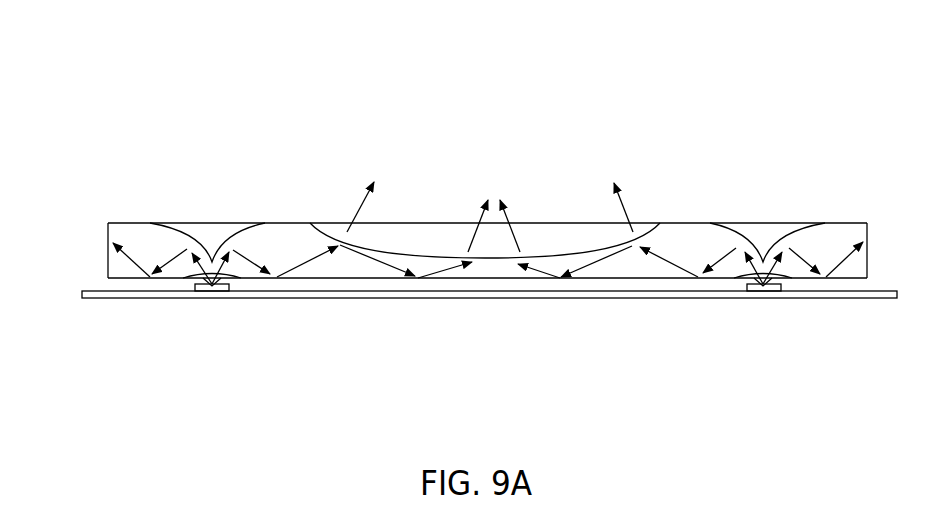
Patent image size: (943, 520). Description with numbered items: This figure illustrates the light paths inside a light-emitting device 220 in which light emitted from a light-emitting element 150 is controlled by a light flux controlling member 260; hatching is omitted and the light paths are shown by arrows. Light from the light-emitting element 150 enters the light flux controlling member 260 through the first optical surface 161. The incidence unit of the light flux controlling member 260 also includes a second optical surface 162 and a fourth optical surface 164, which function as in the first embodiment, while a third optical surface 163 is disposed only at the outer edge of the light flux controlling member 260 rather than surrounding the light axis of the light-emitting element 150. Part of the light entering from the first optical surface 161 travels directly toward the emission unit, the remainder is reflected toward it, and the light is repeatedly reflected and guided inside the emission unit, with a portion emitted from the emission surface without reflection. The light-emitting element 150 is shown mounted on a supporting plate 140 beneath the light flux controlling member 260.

The light-emitting device 220 is at (837, 47).
The light flux controlling member 260 is at (688, 221).
The second optical surface 162 is at (172, 224).
The third optical surface 163 is at (108, 238).
The fourth optical surface 164 is at (123, 279).
The first optical surface 161 is at (228, 292).
The light-emitting element 150 is at (207, 299).
The substrate 140 is at (342, 298).